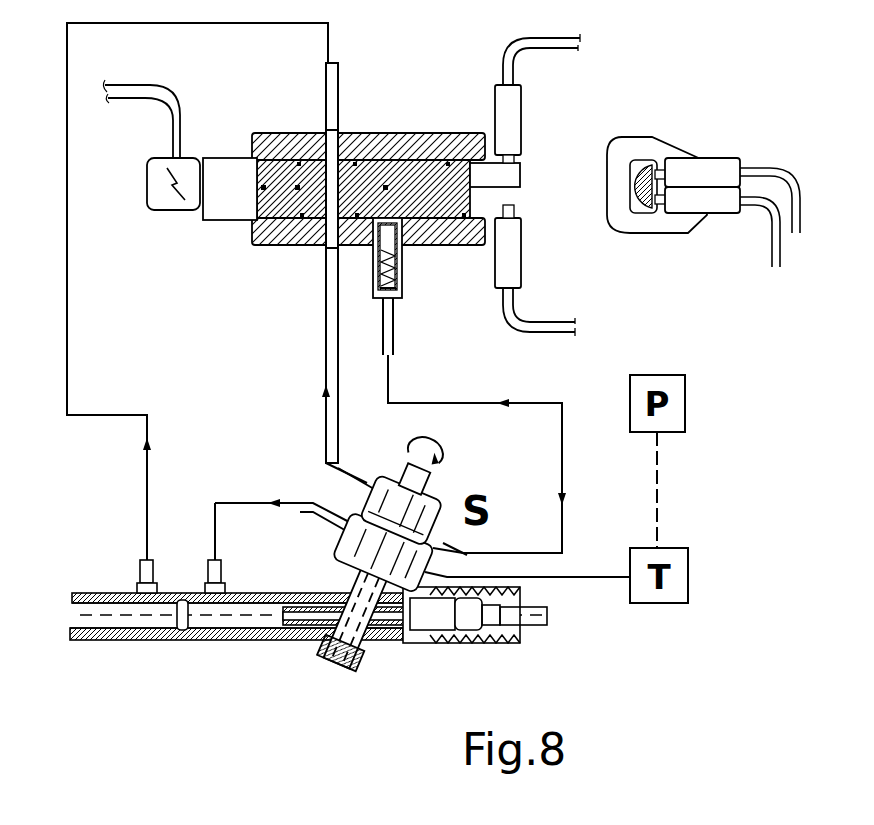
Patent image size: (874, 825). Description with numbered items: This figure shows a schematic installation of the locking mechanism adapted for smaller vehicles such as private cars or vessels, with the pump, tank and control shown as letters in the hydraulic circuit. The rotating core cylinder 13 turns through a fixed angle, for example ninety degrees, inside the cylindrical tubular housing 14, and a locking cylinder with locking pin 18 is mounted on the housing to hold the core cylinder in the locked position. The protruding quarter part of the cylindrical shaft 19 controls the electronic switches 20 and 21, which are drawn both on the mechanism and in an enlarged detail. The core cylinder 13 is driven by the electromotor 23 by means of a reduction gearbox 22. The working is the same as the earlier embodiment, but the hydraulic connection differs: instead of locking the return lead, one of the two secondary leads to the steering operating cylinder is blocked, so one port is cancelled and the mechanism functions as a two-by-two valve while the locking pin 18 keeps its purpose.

The core cylinder 13 is at (410, 173).
The cylindrical tubular housing 14 is at (458, 142).
The locking pin 18 is at (402, 281).
The cylindrical shaft 19 is at (512, 180).
The electronic switch 20 is at (513, 258).
The electronic switch 21 is at (512, 125).
The reduction gearbox 22 is at (228, 167).
The electromotor 23 is at (162, 200).